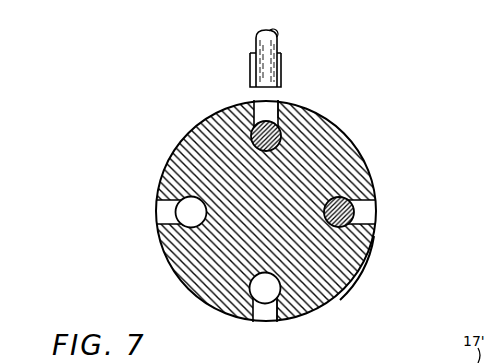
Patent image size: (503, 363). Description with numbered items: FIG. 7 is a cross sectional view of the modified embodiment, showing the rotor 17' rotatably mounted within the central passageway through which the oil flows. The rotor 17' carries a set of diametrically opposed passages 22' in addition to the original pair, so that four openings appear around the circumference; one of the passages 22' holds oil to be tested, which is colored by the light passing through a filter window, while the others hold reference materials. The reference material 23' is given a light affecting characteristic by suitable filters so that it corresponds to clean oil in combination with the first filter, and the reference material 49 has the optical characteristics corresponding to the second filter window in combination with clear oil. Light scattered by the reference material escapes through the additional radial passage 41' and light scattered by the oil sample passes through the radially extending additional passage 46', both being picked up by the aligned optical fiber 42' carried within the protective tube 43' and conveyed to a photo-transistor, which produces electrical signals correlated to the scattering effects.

The rotor 17' is at (253, 211).
The passages 22' is at (250, 207).
The reference material 23' is at (317, 164).
The additional radial passage 41' is at (314, 100).
The optical fiber 42' is at (297, 53).
The protective tube 43' is at (299, 69).
The radially extending additional passage 46' is at (307, 317).
The reference material 49 is at (368, 245).